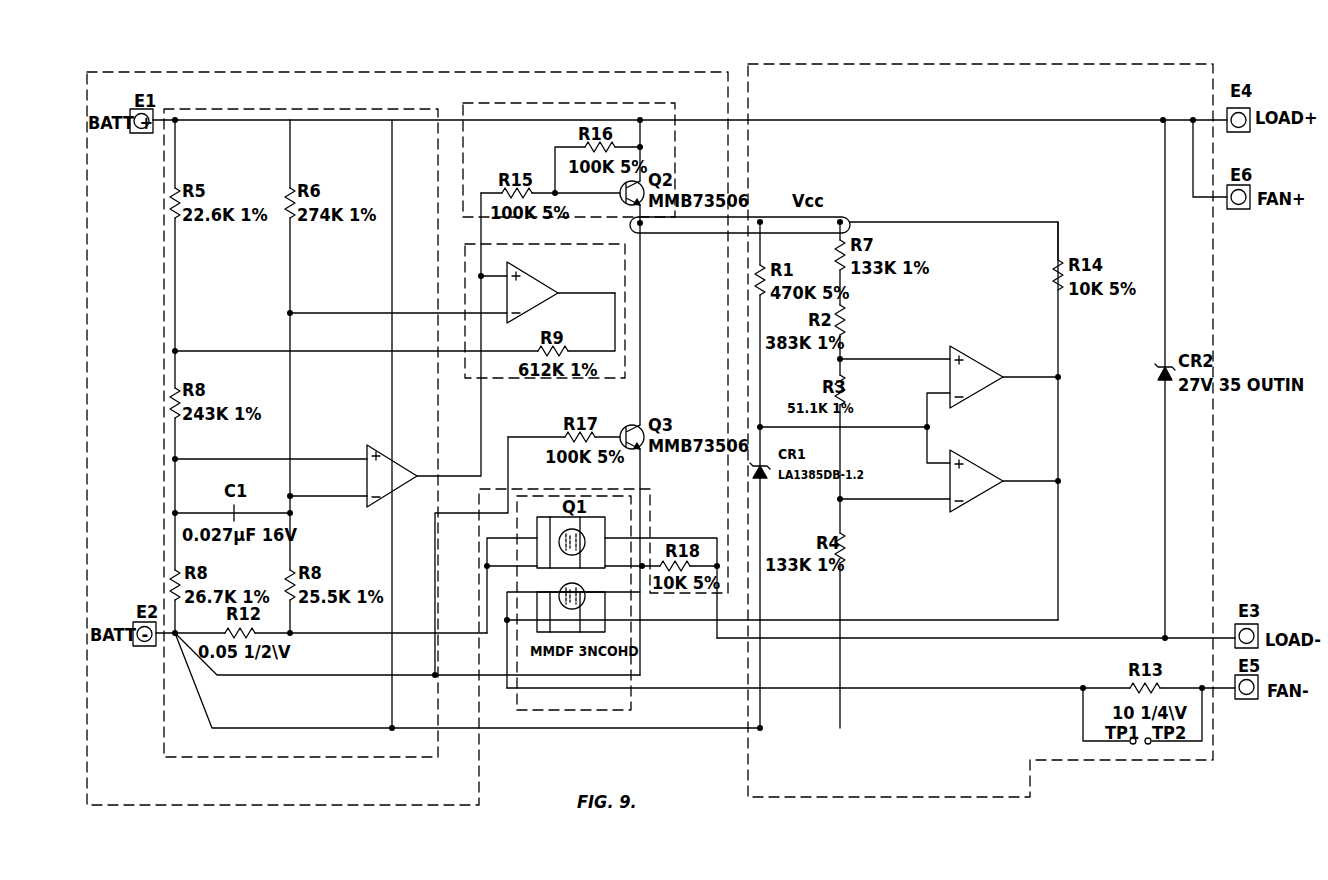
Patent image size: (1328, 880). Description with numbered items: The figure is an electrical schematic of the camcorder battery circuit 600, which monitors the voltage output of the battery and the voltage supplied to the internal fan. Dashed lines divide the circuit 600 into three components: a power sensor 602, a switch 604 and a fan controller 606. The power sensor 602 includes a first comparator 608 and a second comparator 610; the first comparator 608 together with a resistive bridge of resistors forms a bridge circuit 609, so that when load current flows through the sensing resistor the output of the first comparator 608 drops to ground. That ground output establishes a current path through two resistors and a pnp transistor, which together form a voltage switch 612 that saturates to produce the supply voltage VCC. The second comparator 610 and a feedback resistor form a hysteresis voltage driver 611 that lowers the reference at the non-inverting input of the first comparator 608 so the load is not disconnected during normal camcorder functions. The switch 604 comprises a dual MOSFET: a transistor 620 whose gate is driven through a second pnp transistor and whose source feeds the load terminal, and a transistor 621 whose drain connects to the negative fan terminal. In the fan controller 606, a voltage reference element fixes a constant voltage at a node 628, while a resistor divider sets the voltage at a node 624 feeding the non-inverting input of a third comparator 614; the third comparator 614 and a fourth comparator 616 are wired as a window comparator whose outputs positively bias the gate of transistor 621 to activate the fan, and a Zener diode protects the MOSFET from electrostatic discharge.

The camcorder battery circuit 600 is at (350, 60).
The power sensor 602 is at (290, 805).
The switch 604 is at (545, 712).
The fan controller 606 is at (800, 797).
The first comparator 608 is at (385, 453).
The bridge circuit 609 is at (290, 108).
The second comparator 610 is at (534, 286).
The hysteresis voltage driver 611 is at (540, 378).
The voltage switch 612 is at (634, 103).
The third comparator 614 is at (975, 362).
The fourth comparator 616 is at (975, 466).
The transistor 620 is at (566, 530).
The transistor 621 is at (583, 606).
The node 624 is at (841, 358).
The node 628 is at (761, 426).